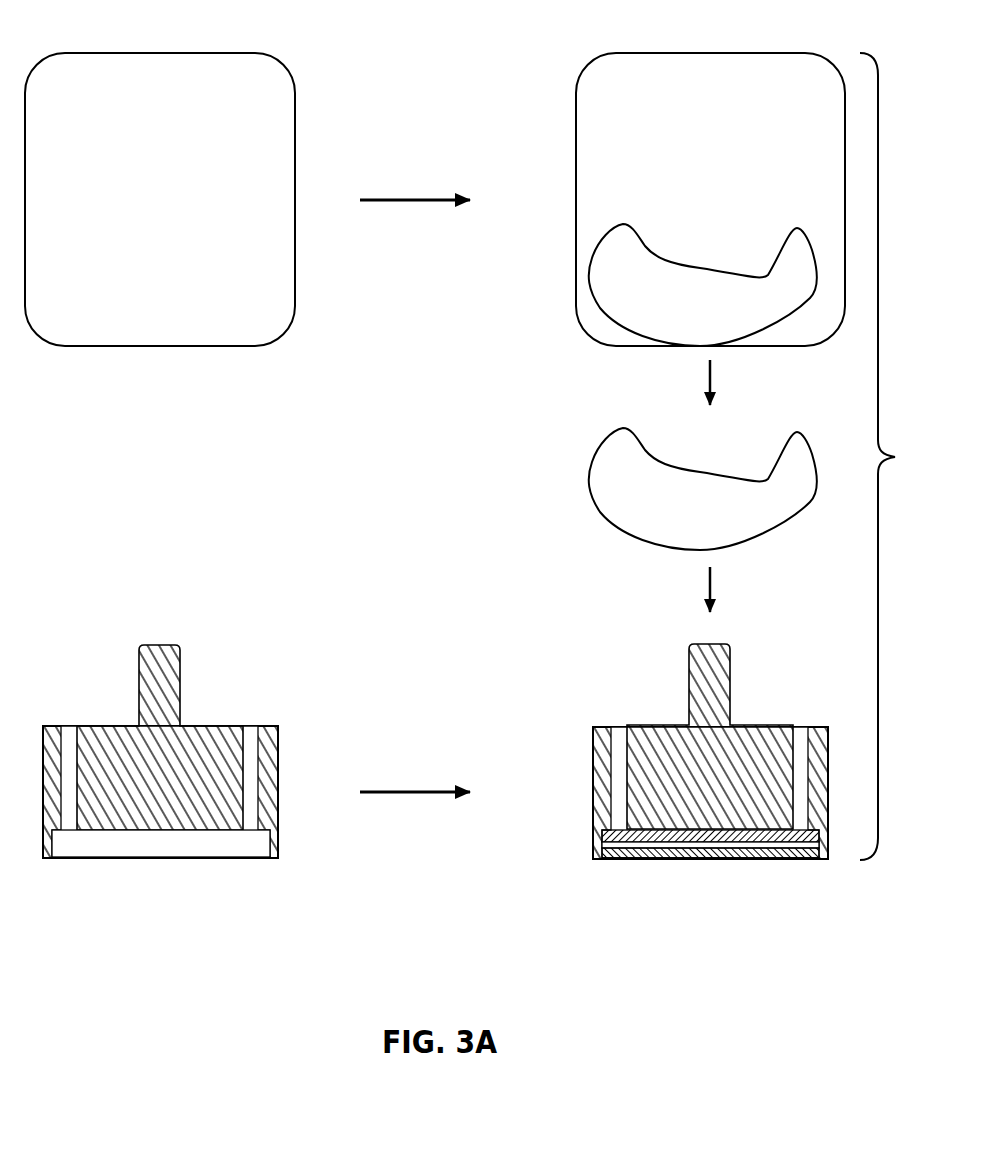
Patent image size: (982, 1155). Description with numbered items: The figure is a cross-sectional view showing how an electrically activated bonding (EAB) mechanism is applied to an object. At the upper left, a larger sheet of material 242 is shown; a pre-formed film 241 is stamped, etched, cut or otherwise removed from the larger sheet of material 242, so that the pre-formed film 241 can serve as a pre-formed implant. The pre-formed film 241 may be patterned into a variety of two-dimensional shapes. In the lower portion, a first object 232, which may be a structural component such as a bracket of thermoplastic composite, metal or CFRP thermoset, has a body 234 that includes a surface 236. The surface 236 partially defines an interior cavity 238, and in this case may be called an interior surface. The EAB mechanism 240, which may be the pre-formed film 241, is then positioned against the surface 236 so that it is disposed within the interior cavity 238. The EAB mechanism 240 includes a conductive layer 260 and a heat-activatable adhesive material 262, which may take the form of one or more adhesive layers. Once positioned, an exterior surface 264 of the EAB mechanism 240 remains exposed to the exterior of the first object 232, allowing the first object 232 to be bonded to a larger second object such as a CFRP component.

The larger sheet of material 242 is at (115, 348).
The pre-formed film 241 is at (610, 518).
The first object 232 is at (86, 716).
The body 234 is at (108, 724).
The surface 236 is at (156, 843).
The interior cavity 238 is at (197, 861).
The EAB mechanism 240 is at (701, 921).
The conductive layer 260 is at (780, 843).
The heat-activatable adhesive material 262 is at (652, 860).
The exterior surface 264 is at (731, 870).